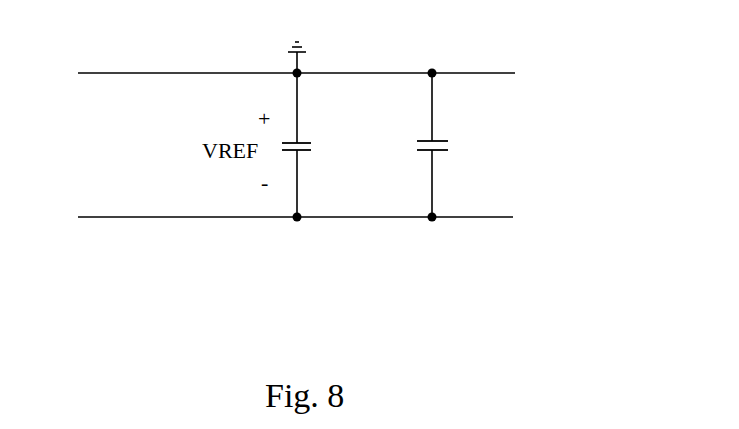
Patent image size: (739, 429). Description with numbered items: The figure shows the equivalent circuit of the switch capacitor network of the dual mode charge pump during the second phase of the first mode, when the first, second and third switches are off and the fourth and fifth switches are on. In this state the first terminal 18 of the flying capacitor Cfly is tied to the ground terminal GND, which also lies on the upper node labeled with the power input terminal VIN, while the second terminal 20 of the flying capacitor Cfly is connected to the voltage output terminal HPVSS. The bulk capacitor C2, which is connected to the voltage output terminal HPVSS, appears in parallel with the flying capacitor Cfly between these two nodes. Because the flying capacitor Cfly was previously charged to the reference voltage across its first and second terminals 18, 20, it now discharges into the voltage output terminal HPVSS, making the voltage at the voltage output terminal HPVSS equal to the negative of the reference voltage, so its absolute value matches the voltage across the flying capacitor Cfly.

The first terminal of the flying capacitor 18 is at (301, 71).
The second terminal of the flying capacitor 20 is at (295, 222).
The flying capacitor Cfly is at (319, 145).
The bulk capacitor C2 is at (448, 145).
The power input terminal VIN is at (270, 74).
The voltage output terminal HPVSS is at (334, 218).
The ground terminal GND is at (294, 41).